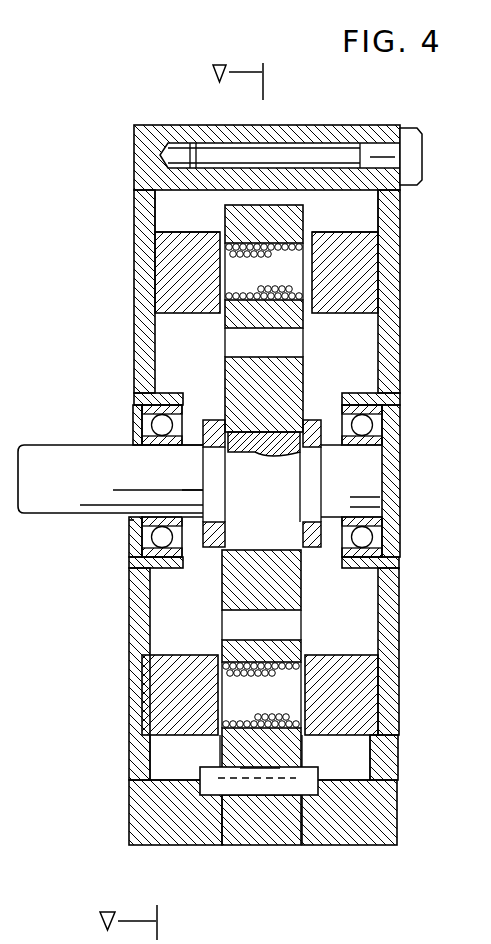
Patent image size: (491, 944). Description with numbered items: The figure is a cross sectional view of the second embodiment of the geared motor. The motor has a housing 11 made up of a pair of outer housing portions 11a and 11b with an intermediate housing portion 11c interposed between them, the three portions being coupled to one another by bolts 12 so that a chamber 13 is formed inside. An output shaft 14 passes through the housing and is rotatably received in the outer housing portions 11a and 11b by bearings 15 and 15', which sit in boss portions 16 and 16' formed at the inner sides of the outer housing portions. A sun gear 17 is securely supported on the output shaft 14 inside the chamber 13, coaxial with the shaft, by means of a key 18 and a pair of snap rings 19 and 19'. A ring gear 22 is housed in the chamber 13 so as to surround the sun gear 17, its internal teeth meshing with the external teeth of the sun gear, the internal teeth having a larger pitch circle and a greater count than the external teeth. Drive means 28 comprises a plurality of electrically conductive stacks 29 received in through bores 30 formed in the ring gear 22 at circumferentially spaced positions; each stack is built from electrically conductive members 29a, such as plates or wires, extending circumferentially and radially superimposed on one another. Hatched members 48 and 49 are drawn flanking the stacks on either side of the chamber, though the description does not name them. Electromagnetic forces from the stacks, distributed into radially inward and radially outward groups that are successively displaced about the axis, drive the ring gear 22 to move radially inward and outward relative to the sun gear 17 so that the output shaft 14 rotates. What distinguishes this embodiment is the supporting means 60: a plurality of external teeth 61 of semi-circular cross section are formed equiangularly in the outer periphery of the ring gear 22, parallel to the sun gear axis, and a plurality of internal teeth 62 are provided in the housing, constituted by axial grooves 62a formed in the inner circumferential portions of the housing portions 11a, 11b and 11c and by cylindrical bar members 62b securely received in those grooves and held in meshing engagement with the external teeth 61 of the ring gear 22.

The housing 11 is at (132, 211).
The outer housing portion 11a is at (133, 323).
The outer housing portion 11b is at (400, 311).
The intermediate housing portion 11c is at (283, 124).
The bolt 12 is at (417, 158).
The chamber 13 is at (205, 378).
The output shaft 14 is at (70, 504).
The bearing 15 is at (144, 421).
The bearing 15' is at (387, 425).
The boss portion 16 is at (163, 558).
The boss portion 16' is at (362, 558).
The sun gear 17 is at (301, 600).
The key 18 is at (258, 462).
The snap ring 19 is at (206, 467).
The snap ring 19' is at (319, 466).
The ring gear 22 is at (225, 222).
The drive means 28 is at (306, 223).
The electrically conductive stack 29 is at (288, 282).
The electrically conductive member 29a is at (230, 304).
The through bore 30 is at (226, 292).
The permanent magnet 48 is at (154, 262).
The permanent magnet 49 is at (379, 262).
The supporting means 60 is at (346, 756).
The external teeth 61 is at (240, 768).
The internal teeth 62 is at (236, 796).
The axial groove 62a is at (308, 792).
The cylindrical bar member 62b is at (275, 795).